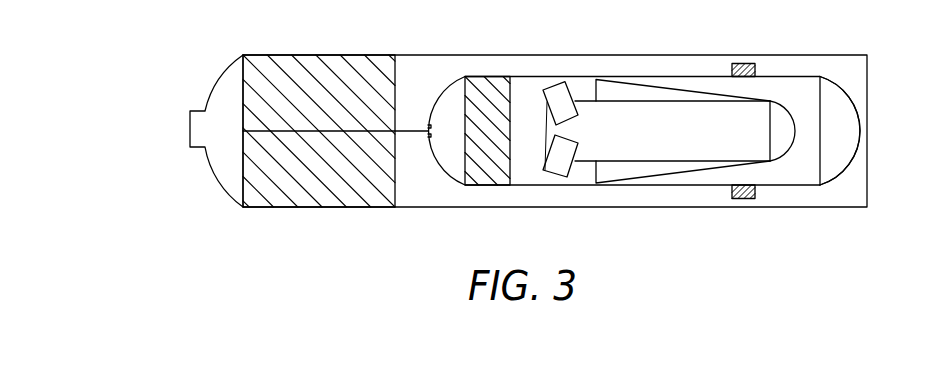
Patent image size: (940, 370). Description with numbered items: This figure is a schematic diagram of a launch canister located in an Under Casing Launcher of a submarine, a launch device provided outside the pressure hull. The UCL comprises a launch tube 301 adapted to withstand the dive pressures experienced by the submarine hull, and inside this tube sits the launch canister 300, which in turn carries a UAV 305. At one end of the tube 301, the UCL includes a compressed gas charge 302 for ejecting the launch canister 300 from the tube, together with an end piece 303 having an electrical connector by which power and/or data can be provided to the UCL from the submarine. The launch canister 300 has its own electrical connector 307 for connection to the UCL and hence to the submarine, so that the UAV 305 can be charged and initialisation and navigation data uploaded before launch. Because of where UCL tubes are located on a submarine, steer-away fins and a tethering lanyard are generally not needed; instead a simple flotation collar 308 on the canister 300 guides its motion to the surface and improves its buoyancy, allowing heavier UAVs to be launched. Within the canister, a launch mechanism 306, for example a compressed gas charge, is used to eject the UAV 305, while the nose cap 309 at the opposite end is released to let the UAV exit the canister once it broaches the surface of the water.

The launch canister 300 is at (640, 186).
The launch tube 301 is at (457, 207).
The compressed gas charge 302 is at (317, 207).
The end piece 303 is at (213, 163).
The UAV 305 is at (708, 140).
The launch mechanism 306 is at (490, 83).
The electrical connector 307 is at (429, 128).
The flotation collar 308 is at (740, 199).
The nose cap 309 is at (858, 126).